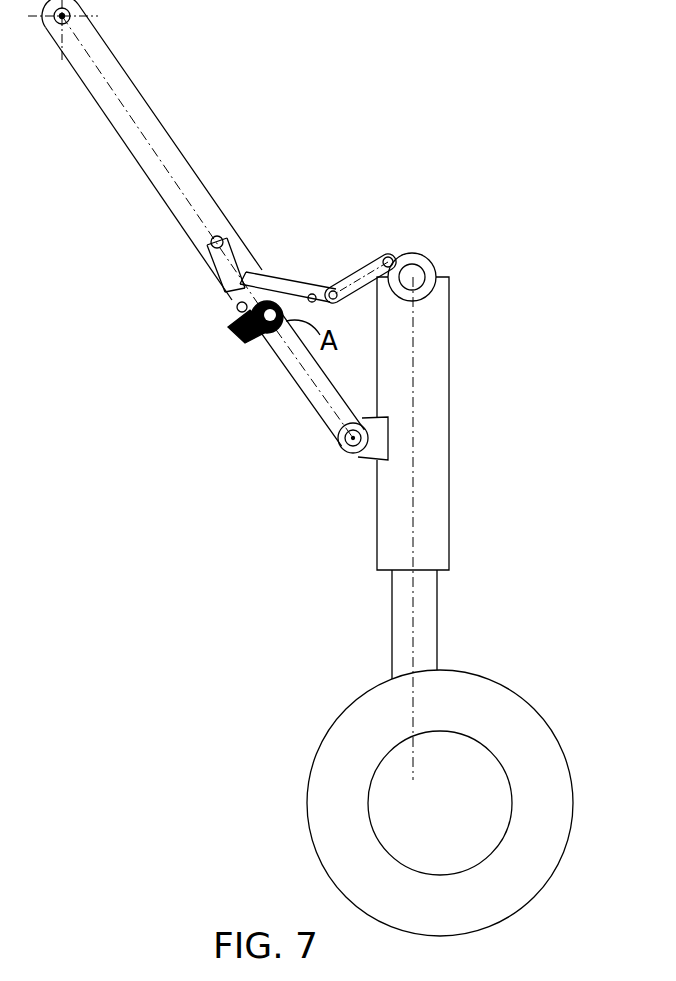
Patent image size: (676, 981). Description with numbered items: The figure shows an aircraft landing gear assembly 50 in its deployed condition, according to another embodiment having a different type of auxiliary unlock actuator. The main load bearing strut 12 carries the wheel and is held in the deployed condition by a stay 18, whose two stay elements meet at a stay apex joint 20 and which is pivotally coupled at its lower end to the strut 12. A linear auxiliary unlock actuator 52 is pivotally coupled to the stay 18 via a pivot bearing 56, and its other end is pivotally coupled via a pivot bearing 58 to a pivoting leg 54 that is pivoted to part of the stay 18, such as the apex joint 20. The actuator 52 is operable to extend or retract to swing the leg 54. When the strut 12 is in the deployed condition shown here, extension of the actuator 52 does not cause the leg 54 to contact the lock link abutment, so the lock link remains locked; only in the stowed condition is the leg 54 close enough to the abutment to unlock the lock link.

The main load bearing strut 12 is at (446, 460).
The stay 18 is at (195, 172).
The stay apex joint 20 is at (263, 337).
The landing gear assembly 50 is at (513, 191).
The linear auxiliary unlock actuator 52 is at (212, 279).
The pivoting leg 54 is at (232, 338).
The pivot bearing 56 is at (210, 241).
The pivot bearing 58 is at (237, 308).